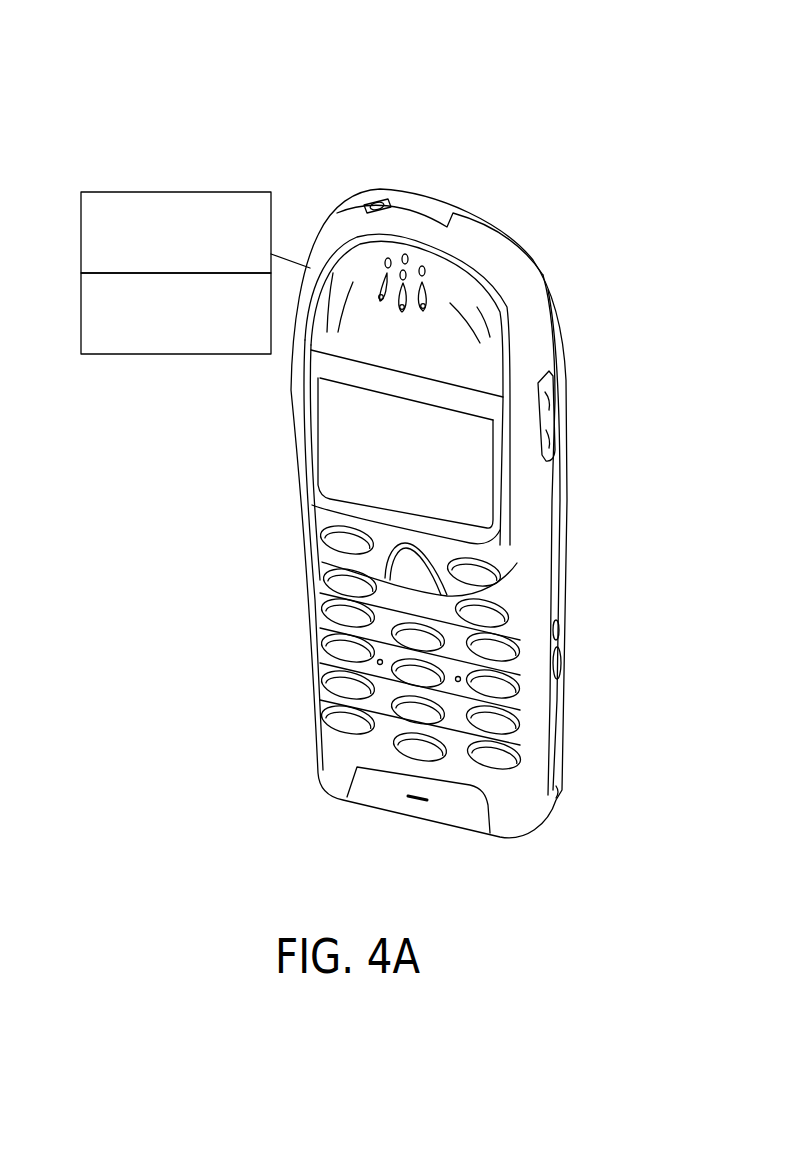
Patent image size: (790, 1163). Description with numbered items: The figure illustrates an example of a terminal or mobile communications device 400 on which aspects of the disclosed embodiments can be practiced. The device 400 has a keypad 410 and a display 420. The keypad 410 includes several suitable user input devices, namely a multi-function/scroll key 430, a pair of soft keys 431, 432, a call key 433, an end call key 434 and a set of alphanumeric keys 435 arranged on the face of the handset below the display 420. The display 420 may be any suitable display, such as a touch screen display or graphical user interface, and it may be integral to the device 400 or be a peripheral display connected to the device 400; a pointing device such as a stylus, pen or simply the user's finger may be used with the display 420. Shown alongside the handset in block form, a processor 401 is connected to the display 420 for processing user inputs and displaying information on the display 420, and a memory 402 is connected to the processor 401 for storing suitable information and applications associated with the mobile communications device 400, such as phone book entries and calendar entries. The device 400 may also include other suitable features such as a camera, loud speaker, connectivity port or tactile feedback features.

The mobile communications device 400 is at (260, 86).
The processor 401 is at (178, 198).
The memory 402 is at (176, 350).
The keypad 410 is at (503, 798).
The display 420 is at (330, 443).
The multi-function/scroll key 430 is at (413, 563).
The soft key 431 is at (338, 540).
The soft key 432 is at (483, 573).
The call key 433 is at (345, 585).
The end call key 434 is at (493, 620).
The alphanumeric keys 435 is at (335, 715).